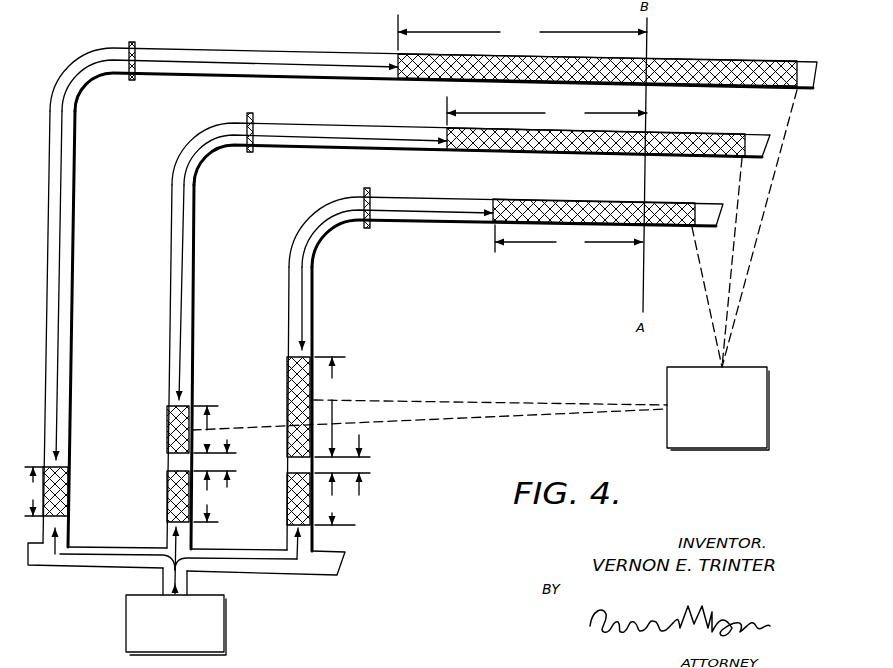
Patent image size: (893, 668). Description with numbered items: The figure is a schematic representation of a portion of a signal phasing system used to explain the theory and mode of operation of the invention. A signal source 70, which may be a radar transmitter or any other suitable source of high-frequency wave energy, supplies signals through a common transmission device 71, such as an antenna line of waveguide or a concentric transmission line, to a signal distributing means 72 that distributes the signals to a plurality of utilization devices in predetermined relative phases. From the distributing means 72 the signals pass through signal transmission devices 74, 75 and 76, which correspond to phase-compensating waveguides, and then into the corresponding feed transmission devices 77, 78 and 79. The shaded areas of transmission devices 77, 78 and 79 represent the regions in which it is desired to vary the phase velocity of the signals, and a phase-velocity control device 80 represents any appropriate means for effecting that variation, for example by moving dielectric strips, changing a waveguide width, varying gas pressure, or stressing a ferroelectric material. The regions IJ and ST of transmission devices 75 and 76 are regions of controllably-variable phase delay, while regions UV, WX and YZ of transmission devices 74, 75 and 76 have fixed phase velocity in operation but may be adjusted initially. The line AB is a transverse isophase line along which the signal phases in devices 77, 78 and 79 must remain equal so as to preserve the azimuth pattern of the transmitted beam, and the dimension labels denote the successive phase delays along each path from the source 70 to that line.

The signal source 70 is at (227, 632).
The common transmission device 71 is at (187, 576).
The signal distributing means 72 is at (330, 559).
The signal transmission device 74 is at (55, 251).
The signal transmission device 75 is at (171, 318).
The signal transmission device 76 is at (290, 348).
The transmission device 77 is at (268, 53).
The transmission device 78 is at (337, 124).
The transmission device 79 is at (428, 197).
The phase-velocity control device 80 is at (762, 367).